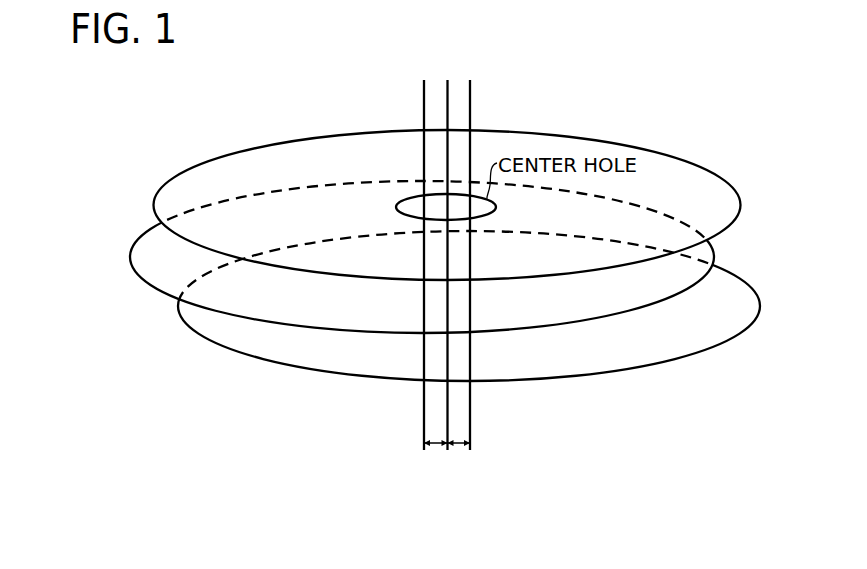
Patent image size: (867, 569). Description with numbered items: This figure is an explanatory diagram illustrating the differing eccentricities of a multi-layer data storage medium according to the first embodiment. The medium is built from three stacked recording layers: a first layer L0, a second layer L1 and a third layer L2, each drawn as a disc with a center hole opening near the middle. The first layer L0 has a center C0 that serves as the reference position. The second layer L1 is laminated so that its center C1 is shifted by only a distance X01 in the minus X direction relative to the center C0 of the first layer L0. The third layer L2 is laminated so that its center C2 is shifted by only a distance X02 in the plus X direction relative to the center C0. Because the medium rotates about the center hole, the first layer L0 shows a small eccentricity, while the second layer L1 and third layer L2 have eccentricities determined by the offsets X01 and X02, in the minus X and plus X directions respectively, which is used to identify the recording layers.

The first layer L0 is at (157, 193).
The second layer L1 is at (134, 247).
The third layer L2 is at (178, 317).
The center of the L0 layer C0 is at (448, 240).
The center of the L1 layer C1 is at (419, 252).
The center of the L2 layer C2 is at (475, 252).
The shift of C1 from C0 X01 is at (431, 446).
The shift of C2 from C0 X02 is at (466, 446).